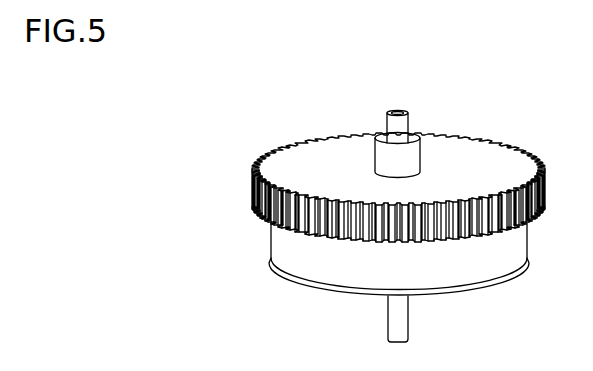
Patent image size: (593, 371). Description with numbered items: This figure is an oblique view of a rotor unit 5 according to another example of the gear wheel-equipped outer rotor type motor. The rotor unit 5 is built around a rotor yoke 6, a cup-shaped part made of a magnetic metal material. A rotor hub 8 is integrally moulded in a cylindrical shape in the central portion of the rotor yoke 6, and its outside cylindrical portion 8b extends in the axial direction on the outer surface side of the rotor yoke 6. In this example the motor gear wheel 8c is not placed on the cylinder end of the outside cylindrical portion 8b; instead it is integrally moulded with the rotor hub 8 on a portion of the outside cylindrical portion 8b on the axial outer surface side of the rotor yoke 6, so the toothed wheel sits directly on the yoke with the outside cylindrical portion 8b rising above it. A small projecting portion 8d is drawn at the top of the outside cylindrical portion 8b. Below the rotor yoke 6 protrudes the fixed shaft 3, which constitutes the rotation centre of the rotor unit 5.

The rotor unit 5 is at (267, 102).
The rotor hub 8 is at (346, 158).
The outside cylindrical portion 8b is at (407, 160).
The motor gear wheel 8c is at (250, 181).
The shaft portion 8d is at (393, 141).
The rotor yoke 6 is at (270, 238).
The fixed shaft 3 is at (410, 330).